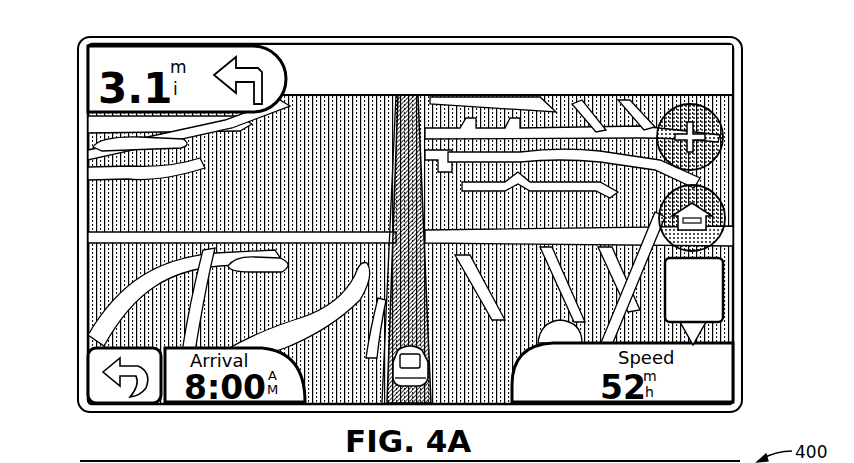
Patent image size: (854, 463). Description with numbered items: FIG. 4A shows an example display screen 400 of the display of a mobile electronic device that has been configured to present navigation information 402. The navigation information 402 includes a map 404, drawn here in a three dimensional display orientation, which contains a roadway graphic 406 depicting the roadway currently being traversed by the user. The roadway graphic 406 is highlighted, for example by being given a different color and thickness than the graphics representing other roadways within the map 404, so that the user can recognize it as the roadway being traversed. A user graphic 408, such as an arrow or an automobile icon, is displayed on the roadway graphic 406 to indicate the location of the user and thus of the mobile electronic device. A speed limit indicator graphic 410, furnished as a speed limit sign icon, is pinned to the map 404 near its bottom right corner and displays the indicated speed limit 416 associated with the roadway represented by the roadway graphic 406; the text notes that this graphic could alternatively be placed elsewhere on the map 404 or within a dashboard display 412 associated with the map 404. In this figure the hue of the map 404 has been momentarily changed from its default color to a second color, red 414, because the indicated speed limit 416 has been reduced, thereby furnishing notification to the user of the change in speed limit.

The display screen 400 is at (757, 32).
The navigation information 402 is at (729, 193).
The map 404 is at (720, 146).
The roadway graphic 406 is at (705, 218).
The user graphic 408 is at (413, 348).
The speed limit indicator graphic 410 is at (741, 300).
The dashboard display 412 is at (718, 80).
The second color (red) 414 is at (96, 222).
The indicated speed limit 416 is at (722, 305).